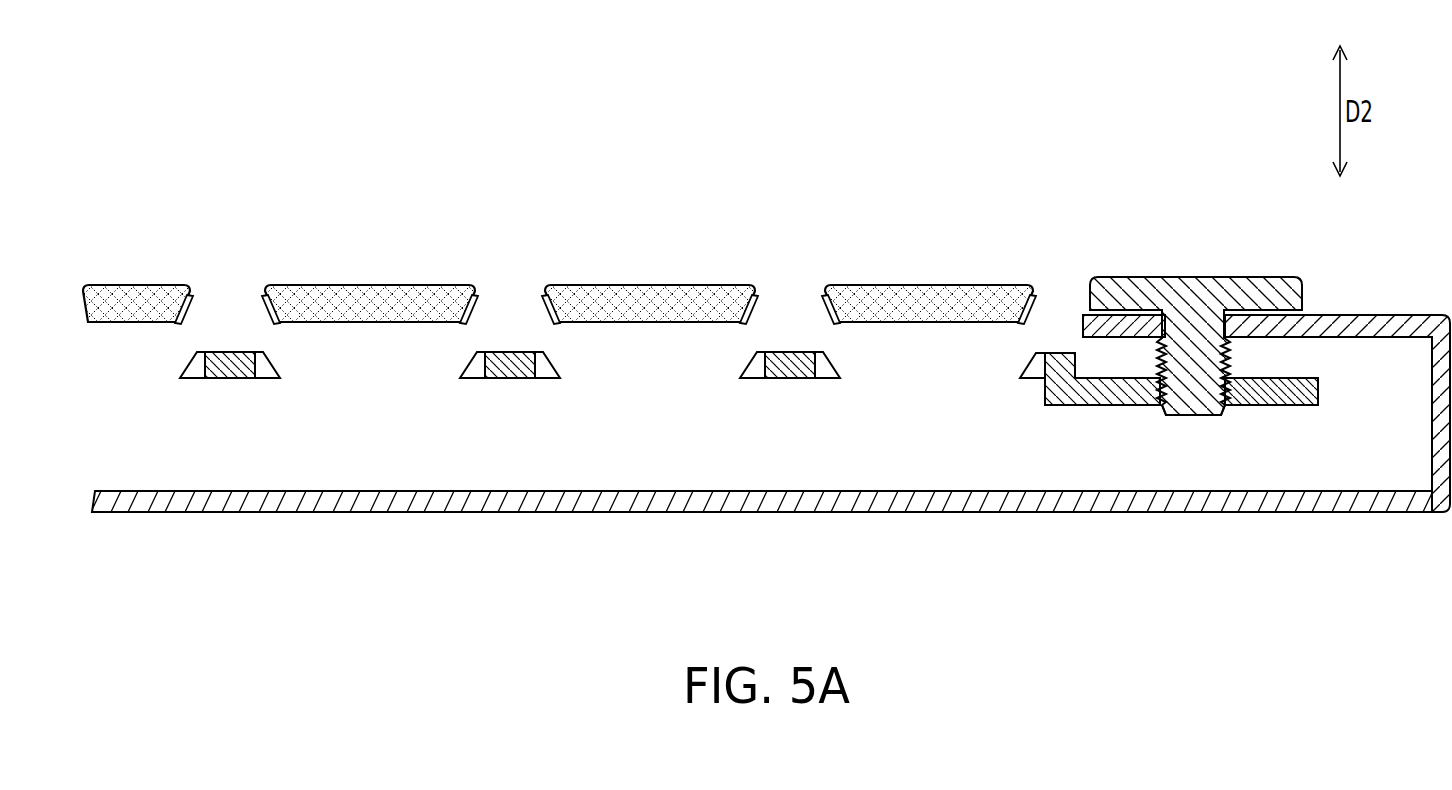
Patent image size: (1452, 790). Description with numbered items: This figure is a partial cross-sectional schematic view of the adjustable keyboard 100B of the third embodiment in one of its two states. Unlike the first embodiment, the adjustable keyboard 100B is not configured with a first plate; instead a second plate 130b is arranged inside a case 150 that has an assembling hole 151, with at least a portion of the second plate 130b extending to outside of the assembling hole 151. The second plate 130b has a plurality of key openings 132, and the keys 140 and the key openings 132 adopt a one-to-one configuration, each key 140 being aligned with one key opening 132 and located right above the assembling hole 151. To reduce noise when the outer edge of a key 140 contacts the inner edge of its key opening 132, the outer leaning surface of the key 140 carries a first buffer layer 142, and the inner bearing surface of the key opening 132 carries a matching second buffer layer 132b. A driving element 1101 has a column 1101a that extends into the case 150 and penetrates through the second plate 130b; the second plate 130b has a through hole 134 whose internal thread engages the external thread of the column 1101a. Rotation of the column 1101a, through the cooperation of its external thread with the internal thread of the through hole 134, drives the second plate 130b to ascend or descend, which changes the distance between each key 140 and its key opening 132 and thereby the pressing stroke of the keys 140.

The adjustable keyboard 100B is at (766, 405).
The second plate 130b is at (505, 352).
The key opening 132 is at (738, 358).
The second buffer layer 132b is at (541, 378).
The through hole 134 is at (1157, 393).
The key 140 is at (640, 300).
The first buffer layer 142 is at (548, 304).
The case 150 is at (973, 500).
The assembling hole 151 is at (1068, 326).
The driving element 1101 is at (1200, 327).
The column 1101a is at (1248, 405).